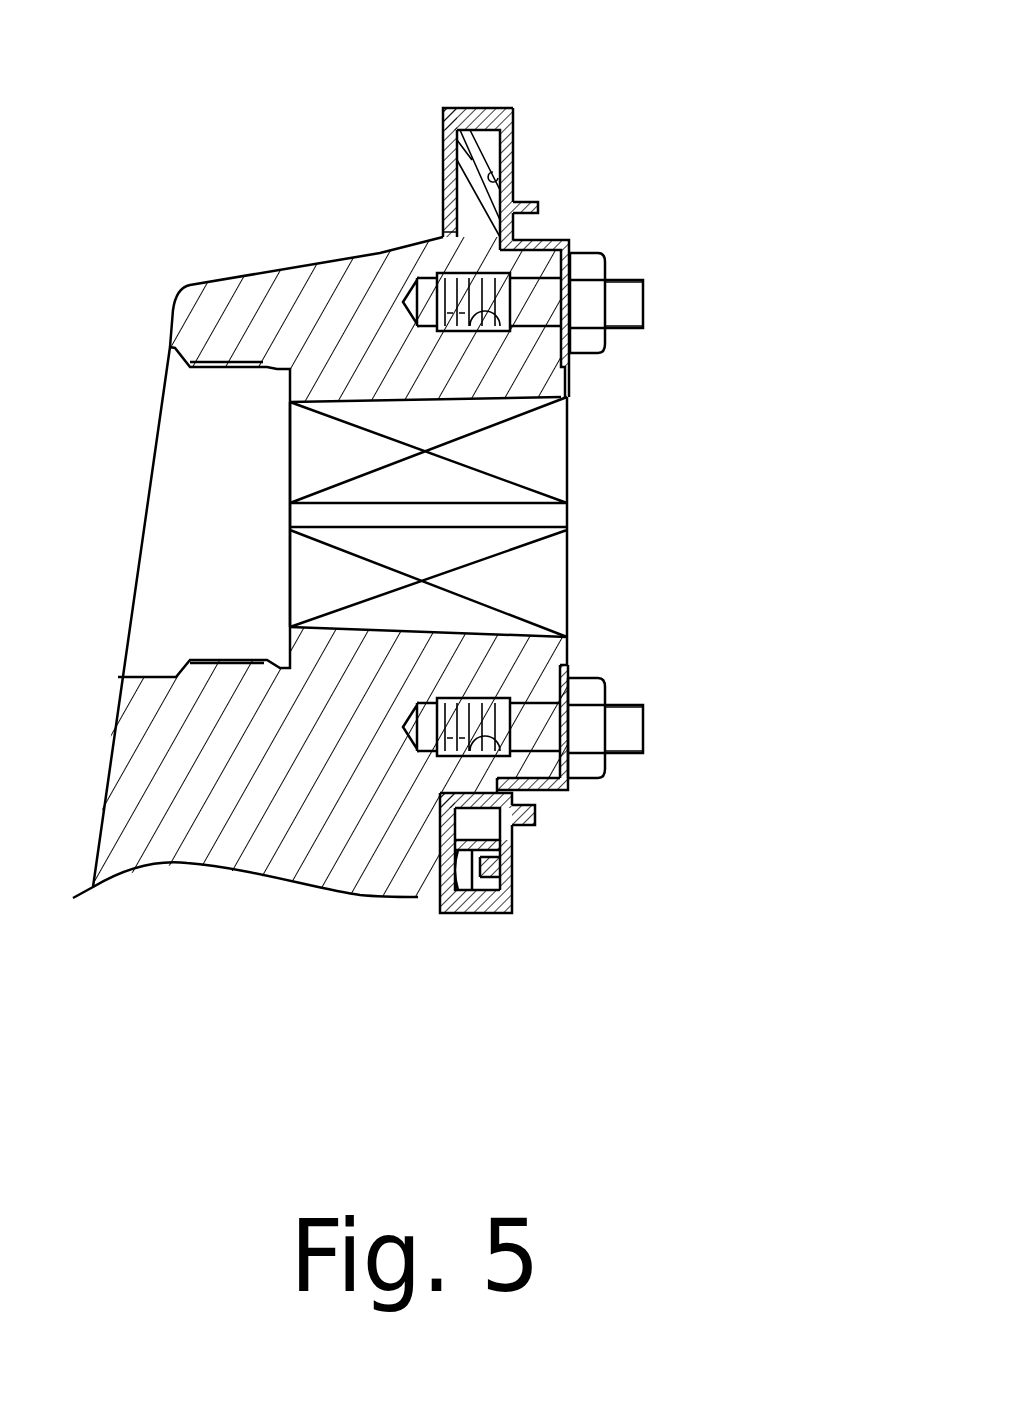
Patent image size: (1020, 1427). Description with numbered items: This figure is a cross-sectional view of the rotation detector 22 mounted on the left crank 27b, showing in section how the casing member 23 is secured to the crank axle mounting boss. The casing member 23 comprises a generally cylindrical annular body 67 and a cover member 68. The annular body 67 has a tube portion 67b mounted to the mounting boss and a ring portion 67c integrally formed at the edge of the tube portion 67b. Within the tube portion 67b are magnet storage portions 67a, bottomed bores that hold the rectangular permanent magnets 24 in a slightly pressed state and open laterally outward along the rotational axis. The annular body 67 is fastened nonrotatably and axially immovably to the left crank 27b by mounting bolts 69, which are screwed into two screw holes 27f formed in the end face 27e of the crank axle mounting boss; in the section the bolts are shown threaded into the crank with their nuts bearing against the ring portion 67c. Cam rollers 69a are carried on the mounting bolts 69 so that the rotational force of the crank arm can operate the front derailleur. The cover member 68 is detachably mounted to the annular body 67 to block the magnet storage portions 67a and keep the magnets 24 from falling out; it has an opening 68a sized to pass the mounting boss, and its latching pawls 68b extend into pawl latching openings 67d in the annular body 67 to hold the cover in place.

The rotation detector 22 is at (615, 185).
The casing member 23 is at (507, 203).
The magnets 24 is at (470, 160).
The left crank 27b is at (280, 300).
The end face 27e is at (585, 702).
The screw holes 27f is at (497, 300).
The annular body 67 is at (530, 138).
The magnet storage portions 67a is at (515, 197).
The tube portion 67b is at (560, 792).
The ring portion 67c is at (567, 668).
The pawl latching openings 67d is at (497, 860).
The cover member 68 is at (438, 185).
The opening 68a is at (440, 250).
The latching pawls 68b is at (455, 870).
The mounting bolts 69 is at (625, 300).
The cam rollers 69a is at (632, 318).